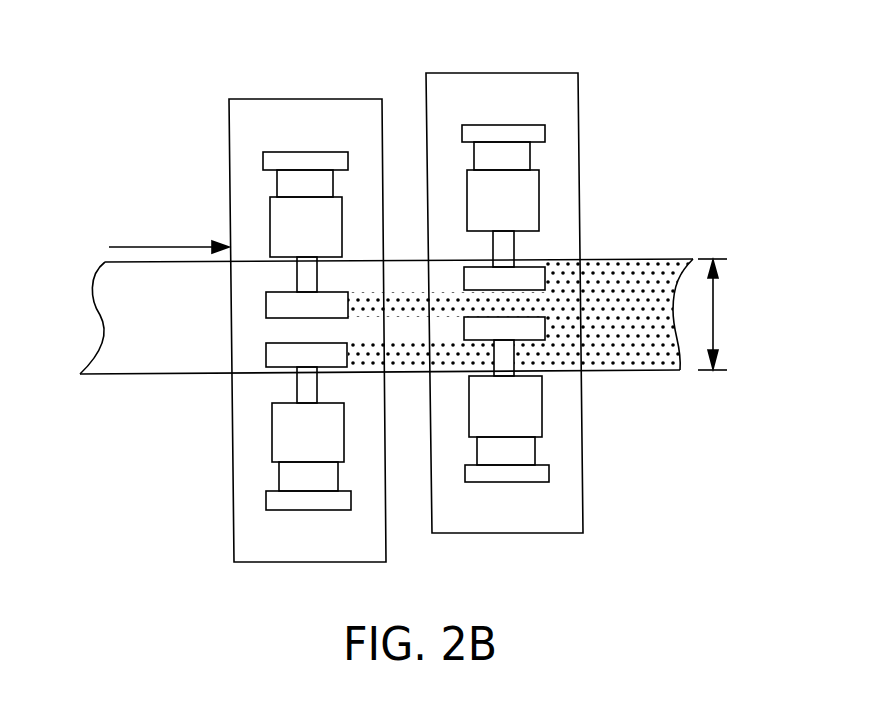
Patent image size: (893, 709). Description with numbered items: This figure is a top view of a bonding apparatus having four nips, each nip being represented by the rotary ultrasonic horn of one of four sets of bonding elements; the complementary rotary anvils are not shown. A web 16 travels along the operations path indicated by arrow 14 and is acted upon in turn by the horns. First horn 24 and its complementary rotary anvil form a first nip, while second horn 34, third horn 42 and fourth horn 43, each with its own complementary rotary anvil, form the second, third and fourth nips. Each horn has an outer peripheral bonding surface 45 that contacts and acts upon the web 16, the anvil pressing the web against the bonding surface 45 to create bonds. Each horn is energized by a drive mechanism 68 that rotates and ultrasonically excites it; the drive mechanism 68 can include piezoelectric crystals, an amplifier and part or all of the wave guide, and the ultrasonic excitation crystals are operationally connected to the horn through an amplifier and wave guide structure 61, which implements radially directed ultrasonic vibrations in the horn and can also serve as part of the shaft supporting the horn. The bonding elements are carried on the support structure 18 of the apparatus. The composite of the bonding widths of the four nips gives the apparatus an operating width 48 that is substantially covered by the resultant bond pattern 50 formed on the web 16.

The arrow 14 is at (158, 247).
The web 16 is at (160, 337).
The support structure 18 is at (318, 99).
The first rotary ultrasonic horn 24 is at (266, 352).
The second rotary ultrasonic horn 34 is at (530, 341).
The third ultrasonic horn 42 is at (538, 262).
The fourth horn 43 is at (266, 301).
The outer peripheral bonding surface 45 is at (323, 356).
The operating width 48 is at (713, 315).
The bond pattern 50 is at (640, 292).
The amplifier and wave guide structure 61 is at (540, 197).
The drive mechanism 68 is at (498, 125).